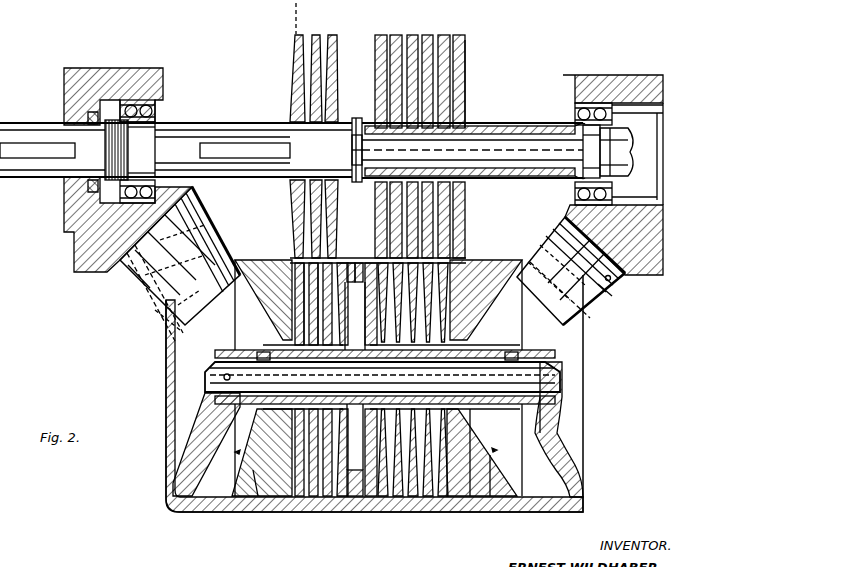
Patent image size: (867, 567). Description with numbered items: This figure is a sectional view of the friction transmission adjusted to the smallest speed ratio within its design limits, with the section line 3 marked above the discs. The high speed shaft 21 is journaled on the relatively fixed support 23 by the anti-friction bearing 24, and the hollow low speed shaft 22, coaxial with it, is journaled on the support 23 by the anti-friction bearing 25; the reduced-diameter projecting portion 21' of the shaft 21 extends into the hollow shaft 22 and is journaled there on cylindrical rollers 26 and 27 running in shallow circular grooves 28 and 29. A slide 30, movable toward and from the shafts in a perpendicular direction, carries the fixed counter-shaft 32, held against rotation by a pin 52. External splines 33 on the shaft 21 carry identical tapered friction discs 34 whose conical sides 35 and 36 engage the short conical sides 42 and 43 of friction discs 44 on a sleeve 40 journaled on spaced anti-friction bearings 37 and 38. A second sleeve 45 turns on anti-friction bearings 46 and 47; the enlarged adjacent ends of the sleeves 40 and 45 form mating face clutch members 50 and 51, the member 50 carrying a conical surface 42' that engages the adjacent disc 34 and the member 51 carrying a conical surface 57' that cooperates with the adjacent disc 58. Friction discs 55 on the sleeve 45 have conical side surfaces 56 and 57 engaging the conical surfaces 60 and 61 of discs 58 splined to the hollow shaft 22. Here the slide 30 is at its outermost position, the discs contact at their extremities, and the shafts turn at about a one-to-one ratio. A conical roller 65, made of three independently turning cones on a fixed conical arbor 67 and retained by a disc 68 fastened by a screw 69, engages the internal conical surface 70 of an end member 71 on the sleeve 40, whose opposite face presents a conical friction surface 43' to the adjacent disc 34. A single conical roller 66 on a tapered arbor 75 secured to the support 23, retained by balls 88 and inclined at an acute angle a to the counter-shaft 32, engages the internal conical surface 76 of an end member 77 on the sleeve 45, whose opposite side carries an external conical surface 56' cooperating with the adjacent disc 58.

The section line 3- 3 is at (292, 12).
The high speed shaft 21 is at (176, 135).
The projecting portion 21' is at (481, 135).
The low speed shaft 22 is at (562, 127).
The relatively fixed support 23 is at (115, 72).
The anti-friction bearing 24 is at (133, 70).
The anti-friction bearing 25 is at (593, 103).
The cylindrical rollers 26 is at (360, 163).
The cylindrical rollers 27 is at (574, 188).
The shallow circular groove 28 is at (358, 172).
The shallow circular groove 29 is at (594, 156).
The slide 30 is at (187, 372).
The counter-shaft 32 is at (565, 377).
The external splines 33 is at (260, 140).
The friction discs 34 is at (322, 38).
The conical side 35 is at (300, 37).
The conical side 36 is at (314, 136).
The anti-friction bearing 37 is at (233, 438).
The anti-friction bearing 38 is at (350, 404).
The sleeve 40 is at (262, 352).
The conical side 42 is at (303, 404).
The conical surface 42' is at (354, 404).
The conical side 43 is at (332, 404).
The plate 43' is at (281, 404).
The friction discs 44 is at (320, 497).
The second sleeve 45 is at (542, 397).
The anti-friction bearing 46 is at (368, 352).
The anti-friction bearing 47 is at (527, 353).
The face clutch member 50 is at (345, 262).
The face clutch member 51 is at (371, 262).
The pin 52 is at (226, 373).
The friction discs 55 is at (414, 497).
The conical side surface 56 is at (438, 404).
The external conical surface 56' is at (484, 488).
The conical side surface 57 is at (482, 477).
The conical surface 57' is at (383, 404).
The discs 58 is at (430, 36).
The conical surface 60 is at (466, 42).
The conical surface 61 is at (452, 36).
The roller 65 is at (170, 270).
The roller 66 is at (582, 274).
The conical arbor 67 is at (120, 284).
The disc 68 is at (188, 322).
The screw 69 is at (165, 325).
The internal conical surface 70 is at (249, 466).
The end member 71 is at (258, 480).
The conical arbor 75 is at (606, 297).
The internal conical surface 76 is at (532, 497).
The end member 77 is at (495, 483).
The balls 88 is at (611, 280).
The angle a is at (252, 455).